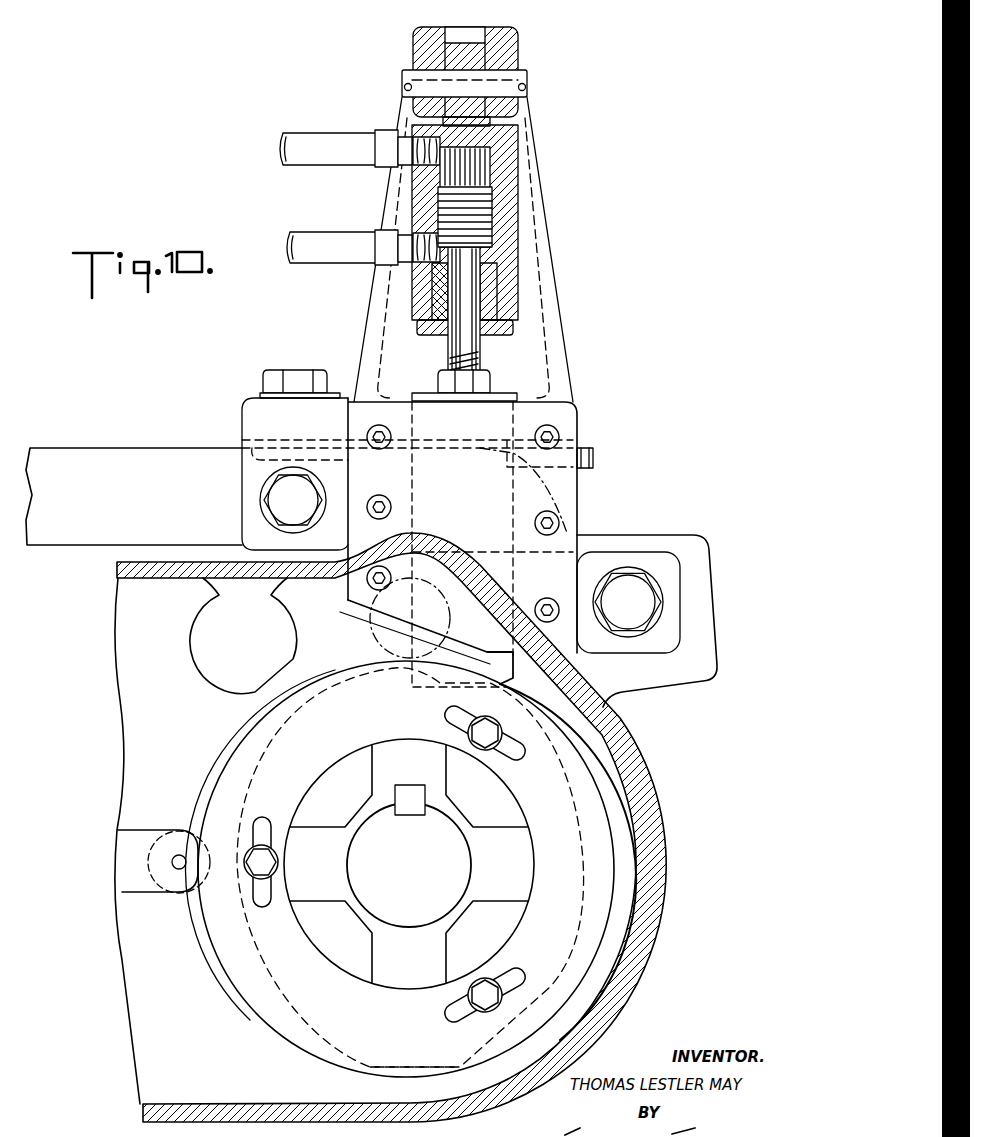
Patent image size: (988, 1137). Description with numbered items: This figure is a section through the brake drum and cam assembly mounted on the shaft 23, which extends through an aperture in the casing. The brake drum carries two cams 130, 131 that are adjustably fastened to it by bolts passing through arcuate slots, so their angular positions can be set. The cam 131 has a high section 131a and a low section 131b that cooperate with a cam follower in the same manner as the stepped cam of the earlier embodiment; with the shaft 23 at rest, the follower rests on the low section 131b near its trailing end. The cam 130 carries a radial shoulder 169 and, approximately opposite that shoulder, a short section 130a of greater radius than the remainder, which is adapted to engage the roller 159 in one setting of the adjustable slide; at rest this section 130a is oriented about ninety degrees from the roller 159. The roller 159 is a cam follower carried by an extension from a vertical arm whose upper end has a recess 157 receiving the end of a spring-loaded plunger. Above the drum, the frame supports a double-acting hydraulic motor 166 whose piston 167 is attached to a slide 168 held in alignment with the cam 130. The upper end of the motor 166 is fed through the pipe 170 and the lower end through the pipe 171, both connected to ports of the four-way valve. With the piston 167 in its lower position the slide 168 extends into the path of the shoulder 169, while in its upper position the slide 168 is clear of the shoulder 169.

The shaft 23 is at (440, 837).
The cam 130 is at (272, 975).
The short section of greater radius 130a is at (370, 1067).
The cam 131 is at (208, 952).
The high section 131a is at (240, 728).
The low section 131b is at (597, 777).
The recess 157 is at (667, 887).
The cam follower 159 is at (188, 830).
The double-acting hydraulic motor 166 is at (510, 238).
The piston 167 is at (488, 197).
The slide 168 is at (508, 503).
The radial shoulder 169 is at (397, 692).
The pipe 170 is at (318, 143).
The pipe 171 is at (318, 240).